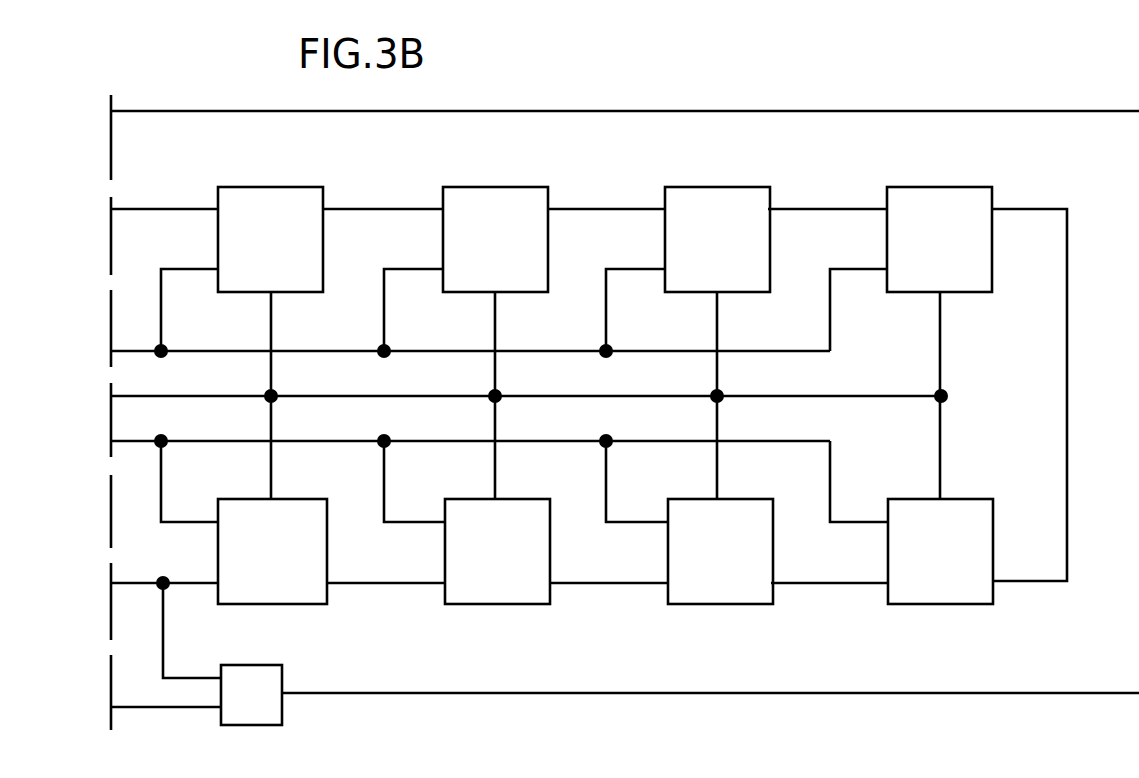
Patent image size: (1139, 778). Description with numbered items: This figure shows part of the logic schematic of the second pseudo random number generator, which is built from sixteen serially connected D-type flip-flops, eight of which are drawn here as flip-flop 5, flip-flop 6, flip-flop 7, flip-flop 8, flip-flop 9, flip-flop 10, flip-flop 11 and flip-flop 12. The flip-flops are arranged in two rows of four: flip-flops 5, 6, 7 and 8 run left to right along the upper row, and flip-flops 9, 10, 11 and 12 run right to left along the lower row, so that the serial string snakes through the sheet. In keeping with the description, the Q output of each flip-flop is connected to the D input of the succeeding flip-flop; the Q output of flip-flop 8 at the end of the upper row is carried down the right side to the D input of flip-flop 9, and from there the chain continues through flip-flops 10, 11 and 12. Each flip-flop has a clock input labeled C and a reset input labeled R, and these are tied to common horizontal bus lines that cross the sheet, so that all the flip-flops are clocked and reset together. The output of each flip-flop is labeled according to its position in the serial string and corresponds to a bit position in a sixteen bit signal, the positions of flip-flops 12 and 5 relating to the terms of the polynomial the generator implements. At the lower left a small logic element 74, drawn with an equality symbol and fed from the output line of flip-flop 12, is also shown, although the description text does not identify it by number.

The D-type flip-flop 5 is at (270, 239).
The D-type flip-flop 6 is at (495, 239).
The D-type flip-flop 7 is at (717, 239).
The D-type flip-flop 8 is at (939, 239).
The D-type flip-flop 9 is at (940, 551).
The D-type flip-flop 10 is at (720, 551).
The D-type flip-flop 11 is at (497, 551).
The D-type flip-flop 12 is at (272, 551).
The exclusive-OR / equality gate (=1) 74 is at (273, 675).